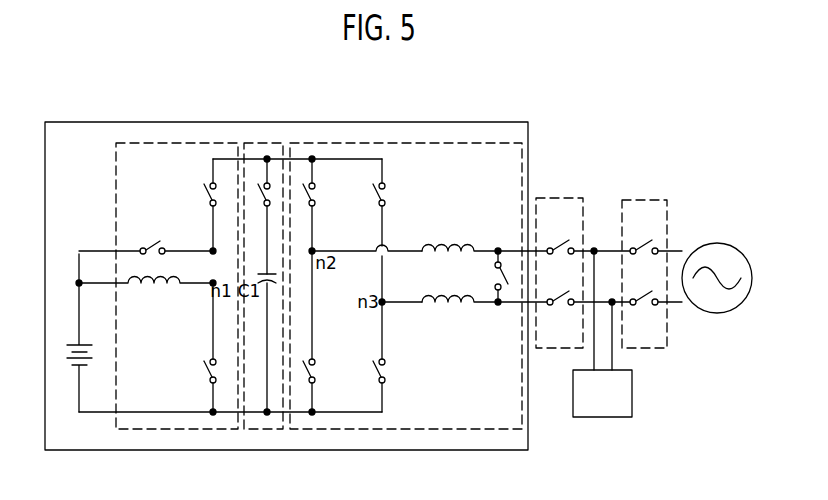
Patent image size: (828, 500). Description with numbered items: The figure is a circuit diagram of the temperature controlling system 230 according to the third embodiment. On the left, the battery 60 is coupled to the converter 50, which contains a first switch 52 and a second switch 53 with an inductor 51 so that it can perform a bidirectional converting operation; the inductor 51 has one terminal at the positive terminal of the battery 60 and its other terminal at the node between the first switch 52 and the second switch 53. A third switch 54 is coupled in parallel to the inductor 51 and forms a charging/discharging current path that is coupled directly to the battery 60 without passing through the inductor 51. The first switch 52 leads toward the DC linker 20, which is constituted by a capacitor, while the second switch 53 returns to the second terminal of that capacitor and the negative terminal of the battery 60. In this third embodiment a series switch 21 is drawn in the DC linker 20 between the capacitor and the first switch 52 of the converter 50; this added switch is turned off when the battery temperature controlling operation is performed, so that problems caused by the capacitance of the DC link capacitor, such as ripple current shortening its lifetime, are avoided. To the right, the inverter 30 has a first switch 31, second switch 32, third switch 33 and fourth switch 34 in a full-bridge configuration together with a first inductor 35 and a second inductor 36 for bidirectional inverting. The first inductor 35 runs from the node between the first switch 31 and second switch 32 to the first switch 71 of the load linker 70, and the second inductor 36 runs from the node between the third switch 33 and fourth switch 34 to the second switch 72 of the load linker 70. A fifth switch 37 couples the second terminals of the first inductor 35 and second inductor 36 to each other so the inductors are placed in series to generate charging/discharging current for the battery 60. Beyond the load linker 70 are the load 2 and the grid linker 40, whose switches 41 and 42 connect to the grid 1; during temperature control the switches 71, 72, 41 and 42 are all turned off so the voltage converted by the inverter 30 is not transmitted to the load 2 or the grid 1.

The grid 1 is at (717, 243).
The load 2 is at (603, 418).
The DC linker 20 is at (264, 143).
The capacitor switch 21 is at (262, 196).
The inverter 30 is at (411, 143).
The first switch 31 is at (318, 196).
The second switch 32 is at (318, 377).
The third switch 33 is at (388, 196).
The fourth switch 34 is at (387, 377).
The first inductor 35 is at (444, 242).
The second inductor 36 is at (446, 312).
The fifth switch 37 is at (484, 275).
The grid linker 40 is at (645, 200).
The switch 41 is at (649, 239).
The switch 42 is at (640, 312).
The converter 50 is at (181, 143).
The inductor 51 is at (154, 290).
The first switch 52 is at (205, 191).
The second switch 53 is at (204, 373).
The third switch 54 is at (157, 241).
The battery 60 is at (68, 352).
The load linker 70 is at (562, 198).
The first switch 71 is at (560, 239).
The second switch 72 is at (561, 312).
The temperature controlling system 230 is at (325, 122).